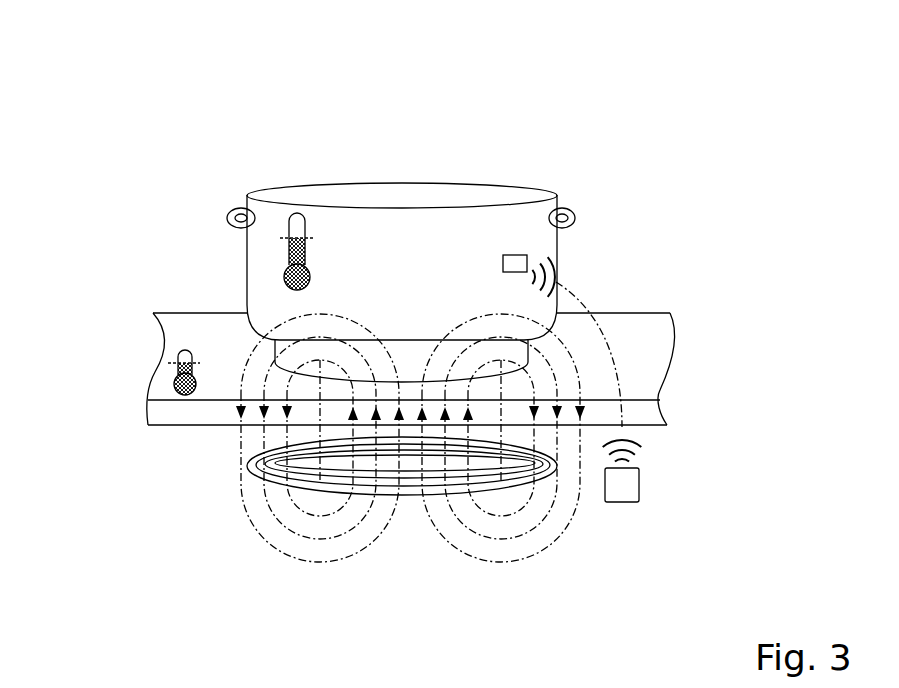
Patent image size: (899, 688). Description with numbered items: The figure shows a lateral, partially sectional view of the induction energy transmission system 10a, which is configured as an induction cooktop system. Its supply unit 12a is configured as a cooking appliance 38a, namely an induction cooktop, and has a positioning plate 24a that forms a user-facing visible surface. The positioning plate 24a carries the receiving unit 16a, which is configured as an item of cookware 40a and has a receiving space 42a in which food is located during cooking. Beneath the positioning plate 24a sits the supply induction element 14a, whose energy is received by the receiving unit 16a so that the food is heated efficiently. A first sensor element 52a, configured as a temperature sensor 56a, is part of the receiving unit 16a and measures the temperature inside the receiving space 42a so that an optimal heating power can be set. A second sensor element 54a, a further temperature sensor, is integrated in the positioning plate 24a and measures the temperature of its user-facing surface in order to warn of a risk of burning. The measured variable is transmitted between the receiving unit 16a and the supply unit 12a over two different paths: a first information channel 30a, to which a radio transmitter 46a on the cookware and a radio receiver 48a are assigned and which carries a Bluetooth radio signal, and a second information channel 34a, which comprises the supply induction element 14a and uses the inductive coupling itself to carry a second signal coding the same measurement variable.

The induction energy transmission system 10a is at (687, 102).
The supply unit 12a is at (349, 413).
The supply induction element 14a is at (410, 497).
The receiving unit 16a is at (455, 149).
The positioning plate 24a is at (637, 381).
The first information channel 30a is at (630, 354).
The second information channel 34a is at (308, 437).
The cooking appliance 38a is at (224, 498).
The item of cookware 40a is at (412, 253).
The receiving space 42a is at (329, 195).
The radio transmitter 46a is at (517, 252).
The radio receiver 48a is at (627, 484).
The first sensor element 52a is at (161, 246).
The second sensor element 54a is at (168, 359).
The temperature sensor 56a is at (290, 258).